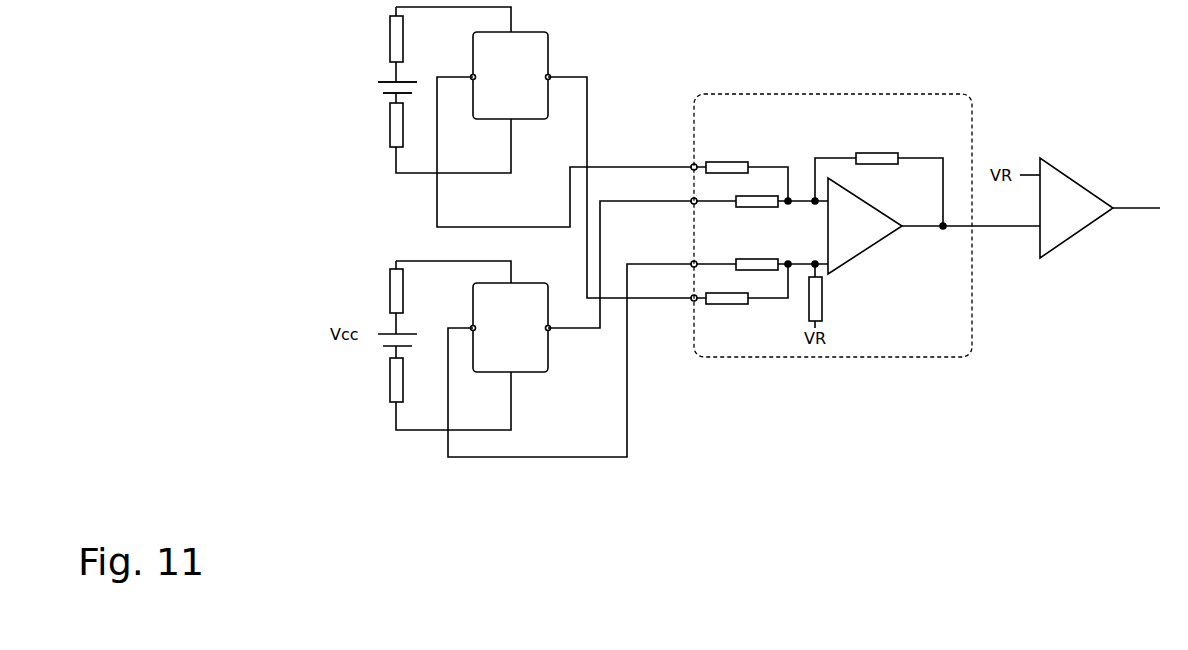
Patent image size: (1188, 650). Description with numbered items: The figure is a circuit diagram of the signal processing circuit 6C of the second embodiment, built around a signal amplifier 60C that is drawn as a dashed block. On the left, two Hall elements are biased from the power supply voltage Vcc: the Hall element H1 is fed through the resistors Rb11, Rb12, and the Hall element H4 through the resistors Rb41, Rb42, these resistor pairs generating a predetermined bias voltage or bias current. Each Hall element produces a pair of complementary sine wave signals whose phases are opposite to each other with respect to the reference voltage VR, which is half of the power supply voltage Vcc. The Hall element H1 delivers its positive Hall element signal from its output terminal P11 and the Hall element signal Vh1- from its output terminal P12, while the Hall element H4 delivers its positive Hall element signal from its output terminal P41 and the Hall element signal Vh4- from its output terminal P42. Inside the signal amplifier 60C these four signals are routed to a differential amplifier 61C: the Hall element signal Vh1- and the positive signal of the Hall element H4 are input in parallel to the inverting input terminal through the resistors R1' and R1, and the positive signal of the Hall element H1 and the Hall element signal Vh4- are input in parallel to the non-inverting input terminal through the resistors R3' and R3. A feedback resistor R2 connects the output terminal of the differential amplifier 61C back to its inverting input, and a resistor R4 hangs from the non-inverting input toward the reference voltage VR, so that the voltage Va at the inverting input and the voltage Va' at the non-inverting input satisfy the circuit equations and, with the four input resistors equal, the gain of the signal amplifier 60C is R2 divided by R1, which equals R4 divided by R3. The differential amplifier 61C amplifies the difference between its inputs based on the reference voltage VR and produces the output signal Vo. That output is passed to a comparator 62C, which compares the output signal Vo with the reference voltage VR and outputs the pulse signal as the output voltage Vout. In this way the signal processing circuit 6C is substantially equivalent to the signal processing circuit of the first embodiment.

The signal processing circuit 6C is at (800, 408).
The signal amplifier 60C is at (835, 89).
The differential amplifier 61C is at (866, 252).
The comparator 62C is at (1080, 228).
The Hall element H1 is at (510, 75).
The Hall element H4 is at (510, 327).
The resistor Rb11 is at (388, 42).
The resistor Rb12 is at (388, 130).
The resistor Rb41 is at (388, 294).
The resistor Rb42 is at (388, 382).
The power supply voltage Vcc is at (373, 82).
The output terminal P11 is at (550, 75).
The output terminal P12 is at (471, 75).
The output terminal P41 is at (550, 326).
The output terminal P42 is at (471, 326).
The Hall element signal Vh1- is at (565, 152).
The Hall element signal Vh4- is at (571, 351).
The resistor R1 is at (762, 191).
The resistor R1' is at (742, 171).
The feedback resistor R2 is at (879, 180).
The resistor R3 is at (762, 254).
The resistor R3' is at (742, 284).
The resistor R4 is at (828, 296).
The voltage at inverting input terminal Va is at (801, 168).
The voltage at non-inverting input terminal Va' is at (803, 245).
The output signal Vo is at (971, 239).
The output voltage Vout is at (1136, 196).